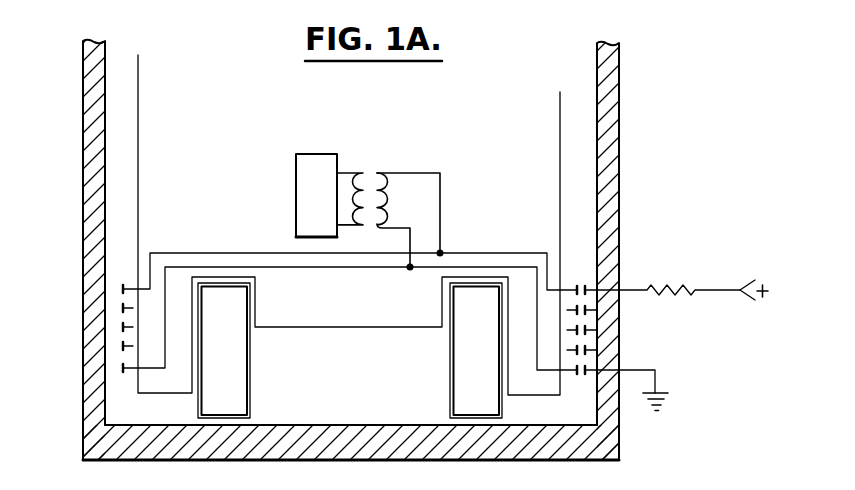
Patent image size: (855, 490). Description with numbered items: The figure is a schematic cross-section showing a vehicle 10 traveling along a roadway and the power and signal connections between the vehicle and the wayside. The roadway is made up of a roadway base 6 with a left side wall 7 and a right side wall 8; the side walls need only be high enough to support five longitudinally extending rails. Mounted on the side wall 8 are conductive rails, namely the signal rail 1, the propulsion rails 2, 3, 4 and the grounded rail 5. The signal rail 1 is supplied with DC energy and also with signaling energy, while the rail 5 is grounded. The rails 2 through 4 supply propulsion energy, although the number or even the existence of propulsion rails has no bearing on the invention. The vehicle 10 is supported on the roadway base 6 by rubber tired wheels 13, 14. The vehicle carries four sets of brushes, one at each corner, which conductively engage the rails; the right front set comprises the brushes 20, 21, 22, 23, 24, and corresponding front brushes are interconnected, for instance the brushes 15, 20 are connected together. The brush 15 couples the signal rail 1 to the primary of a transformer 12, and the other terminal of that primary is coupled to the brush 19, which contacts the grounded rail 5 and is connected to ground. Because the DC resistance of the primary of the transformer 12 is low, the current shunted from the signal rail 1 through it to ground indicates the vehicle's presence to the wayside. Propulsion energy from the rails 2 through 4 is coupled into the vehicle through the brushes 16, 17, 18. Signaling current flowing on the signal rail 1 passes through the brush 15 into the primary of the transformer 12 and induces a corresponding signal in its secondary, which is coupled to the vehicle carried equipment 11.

The signal rail 1 is at (587, 286).
The propulsion rail 2 is at (588, 311).
The propulsion rail 3 is at (588, 331).
The propulsion rail 4 is at (588, 351).
The grounded rail 5 is at (588, 374).
The roadway base 6 is at (328, 435).
The side wall 7 is at (92, 142).
The side wall 8 is at (617, 175).
The vehicle 10 is at (378, 131).
The vehicle carried equipment 11 is at (307, 198).
The transformer 12 is at (373, 173).
The rubber tired wheel 13 is at (233, 364).
The rubber tired wheel 14 is at (485, 365).
The brush 15 is at (577, 288).
The brush 16 is at (567, 310).
The brush 17 is at (567, 330).
The brush 18 is at (567, 350).
The brush 19 is at (572, 371).
The brush 20 is at (125, 288).
The brush 21 is at (133, 308).
The brush 22 is at (133, 327).
The brush 23 is at (133, 346).
The brush 24 is at (124, 370).